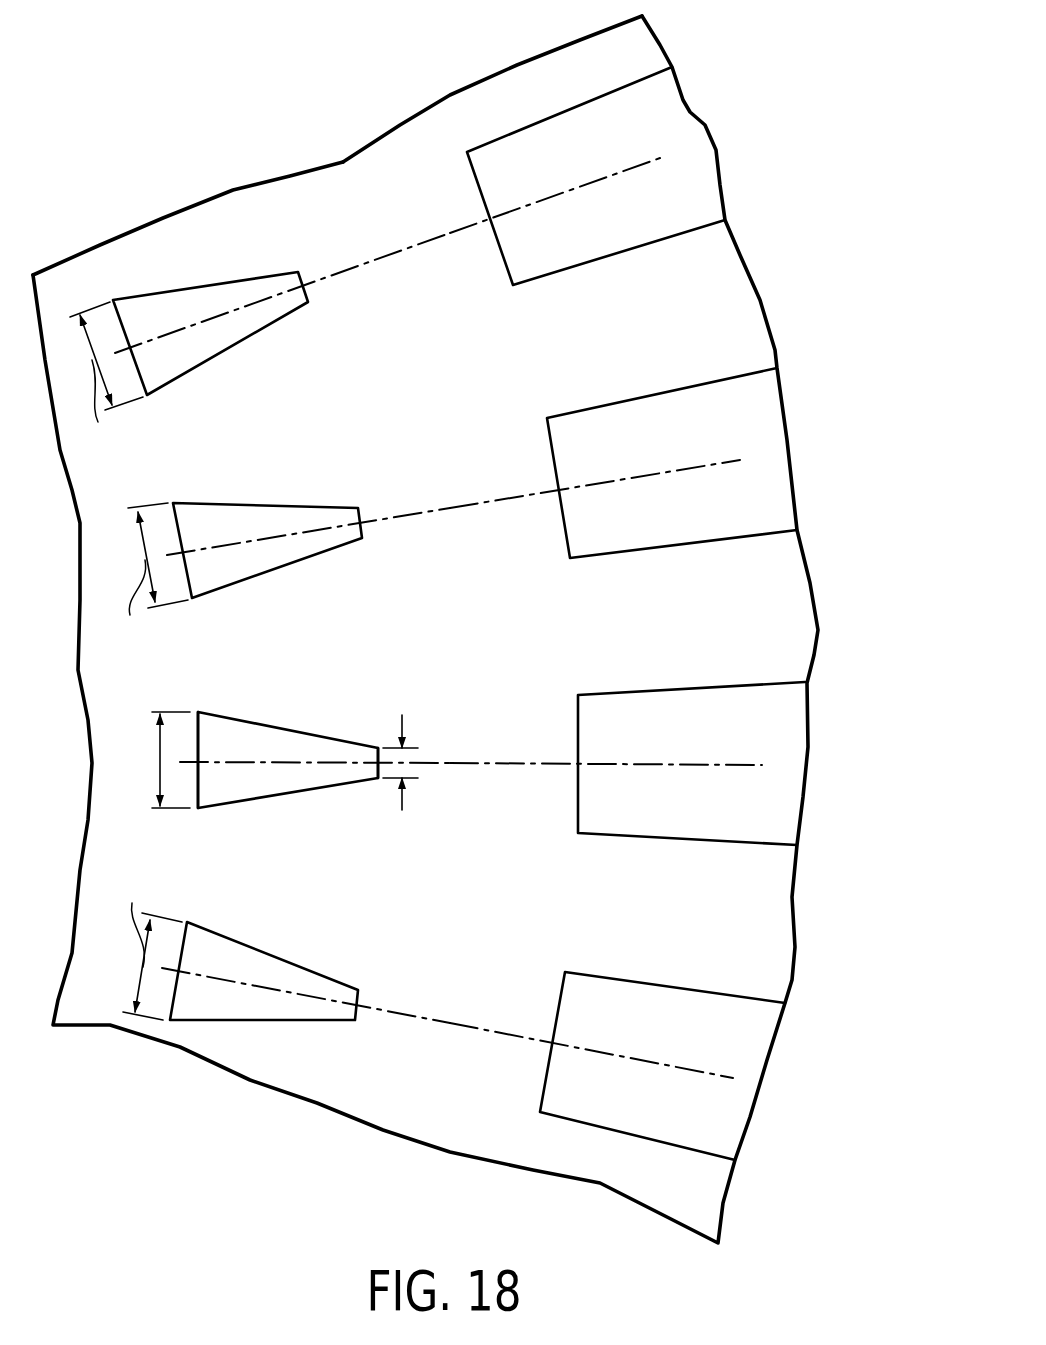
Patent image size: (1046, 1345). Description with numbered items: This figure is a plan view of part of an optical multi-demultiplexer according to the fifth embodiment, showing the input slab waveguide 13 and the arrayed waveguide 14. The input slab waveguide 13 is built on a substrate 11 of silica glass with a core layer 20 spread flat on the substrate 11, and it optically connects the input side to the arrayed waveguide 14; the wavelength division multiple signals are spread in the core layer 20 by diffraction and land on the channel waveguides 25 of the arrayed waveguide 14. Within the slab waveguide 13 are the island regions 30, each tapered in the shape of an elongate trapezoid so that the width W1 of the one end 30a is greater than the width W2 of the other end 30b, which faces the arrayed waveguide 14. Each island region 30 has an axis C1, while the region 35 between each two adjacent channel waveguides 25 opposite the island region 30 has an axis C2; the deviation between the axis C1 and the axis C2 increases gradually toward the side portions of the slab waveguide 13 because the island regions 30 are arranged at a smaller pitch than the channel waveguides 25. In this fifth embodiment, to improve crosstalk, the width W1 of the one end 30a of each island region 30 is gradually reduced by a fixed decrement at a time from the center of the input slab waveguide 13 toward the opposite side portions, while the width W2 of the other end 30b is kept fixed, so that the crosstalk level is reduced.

The substrate 11 is at (318, 1105).
The input slab waveguide 13 is at (237, 188).
The arrayed waveguide 14 is at (507, 62).
The core layer 20 is at (482, 379).
The channel waveguides 25 is at (695, 331).
The island region 30 is at (186, 305).
The one end of island region 30a is at (197, 793).
The other end of island region 30b is at (378, 775).
The region between adjacent channel waveguides 35 is at (678, 108).
The axis of island region C1 is at (172, 337).
The axis of region between channel waveguides C2 is at (603, 180).
The width of one end W1 is at (145, 760).
The width of other end W2 is at (419, 769).